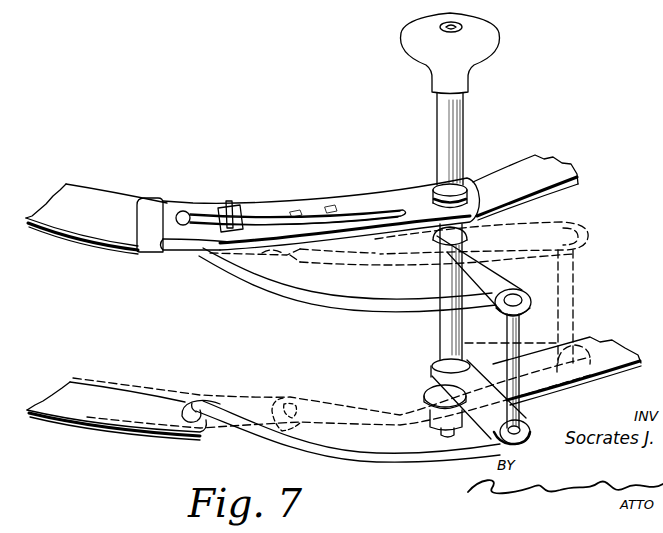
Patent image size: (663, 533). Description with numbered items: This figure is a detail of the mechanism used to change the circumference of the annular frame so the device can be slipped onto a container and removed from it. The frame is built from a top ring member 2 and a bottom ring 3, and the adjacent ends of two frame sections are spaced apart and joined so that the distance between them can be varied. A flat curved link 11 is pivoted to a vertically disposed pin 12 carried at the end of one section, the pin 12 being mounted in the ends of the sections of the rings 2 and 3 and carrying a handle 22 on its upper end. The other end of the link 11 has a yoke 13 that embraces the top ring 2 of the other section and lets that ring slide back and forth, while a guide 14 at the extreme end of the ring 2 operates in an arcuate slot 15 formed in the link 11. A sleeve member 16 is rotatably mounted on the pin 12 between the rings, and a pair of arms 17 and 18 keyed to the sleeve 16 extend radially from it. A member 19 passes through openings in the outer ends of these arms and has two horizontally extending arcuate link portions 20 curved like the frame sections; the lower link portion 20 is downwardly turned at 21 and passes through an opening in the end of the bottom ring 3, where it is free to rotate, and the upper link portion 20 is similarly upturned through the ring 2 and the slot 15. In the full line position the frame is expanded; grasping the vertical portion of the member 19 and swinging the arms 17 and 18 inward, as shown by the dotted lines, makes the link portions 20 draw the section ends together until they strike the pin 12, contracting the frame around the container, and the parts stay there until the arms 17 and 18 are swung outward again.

The top ring member 2 is at (110, 212).
The bottom ring 3 is at (83, 407).
The flat curved link 11 is at (350, 208).
The pin 12 is at (460, 126).
The yoke 13 is at (177, 198).
The guide 14 is at (233, 208).
The slot 15 is at (207, 222).
The sleeve member 16 is at (438, 330).
The arm 17 is at (490, 277).
The arm 18 is at (470, 392).
The member 19 is at (513, 340).
The link portions 20 is at (307, 298).
The downwardly turned end 21 is at (187, 412).
The handle 22 is at (487, 40).